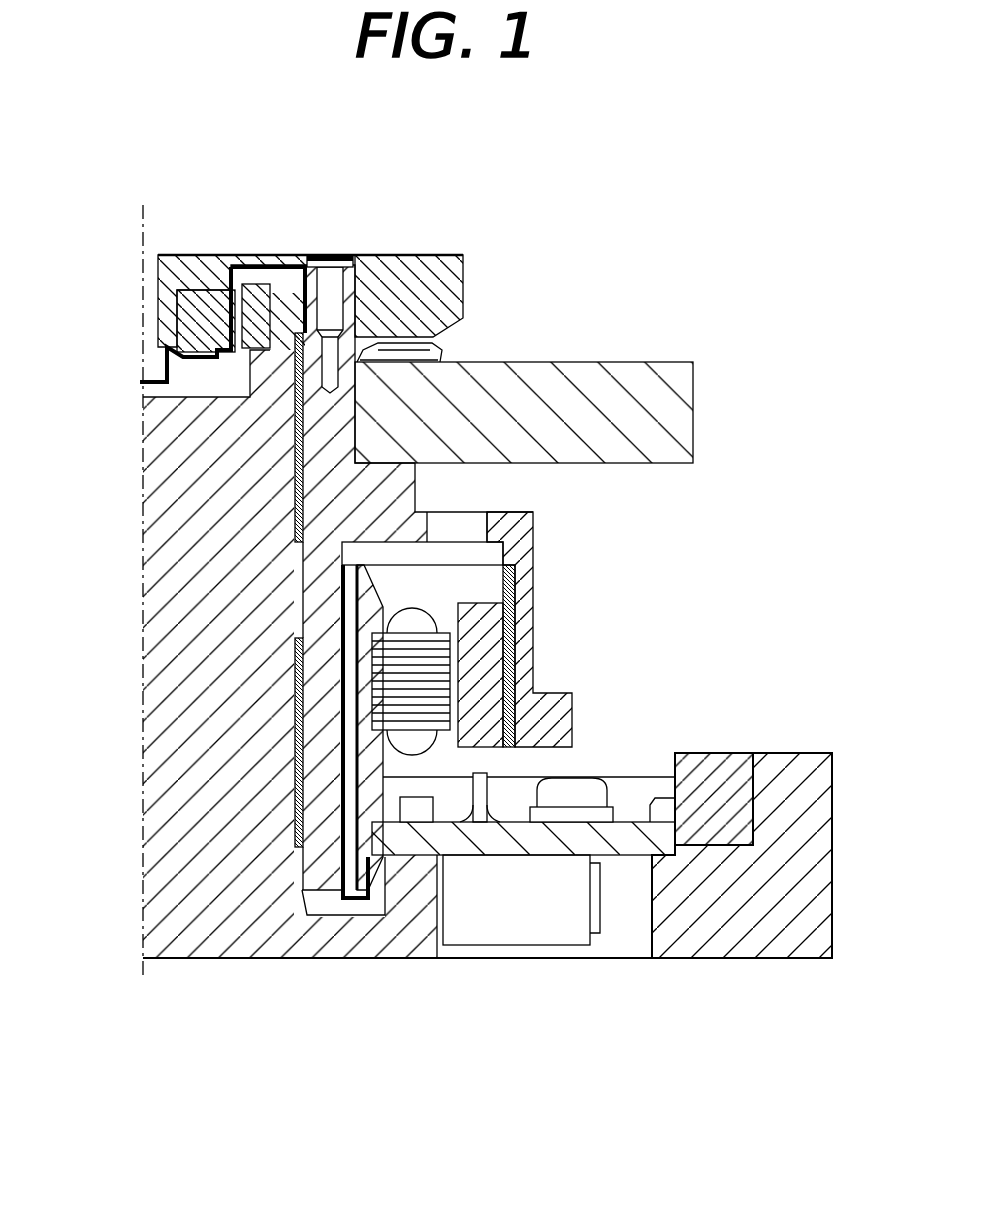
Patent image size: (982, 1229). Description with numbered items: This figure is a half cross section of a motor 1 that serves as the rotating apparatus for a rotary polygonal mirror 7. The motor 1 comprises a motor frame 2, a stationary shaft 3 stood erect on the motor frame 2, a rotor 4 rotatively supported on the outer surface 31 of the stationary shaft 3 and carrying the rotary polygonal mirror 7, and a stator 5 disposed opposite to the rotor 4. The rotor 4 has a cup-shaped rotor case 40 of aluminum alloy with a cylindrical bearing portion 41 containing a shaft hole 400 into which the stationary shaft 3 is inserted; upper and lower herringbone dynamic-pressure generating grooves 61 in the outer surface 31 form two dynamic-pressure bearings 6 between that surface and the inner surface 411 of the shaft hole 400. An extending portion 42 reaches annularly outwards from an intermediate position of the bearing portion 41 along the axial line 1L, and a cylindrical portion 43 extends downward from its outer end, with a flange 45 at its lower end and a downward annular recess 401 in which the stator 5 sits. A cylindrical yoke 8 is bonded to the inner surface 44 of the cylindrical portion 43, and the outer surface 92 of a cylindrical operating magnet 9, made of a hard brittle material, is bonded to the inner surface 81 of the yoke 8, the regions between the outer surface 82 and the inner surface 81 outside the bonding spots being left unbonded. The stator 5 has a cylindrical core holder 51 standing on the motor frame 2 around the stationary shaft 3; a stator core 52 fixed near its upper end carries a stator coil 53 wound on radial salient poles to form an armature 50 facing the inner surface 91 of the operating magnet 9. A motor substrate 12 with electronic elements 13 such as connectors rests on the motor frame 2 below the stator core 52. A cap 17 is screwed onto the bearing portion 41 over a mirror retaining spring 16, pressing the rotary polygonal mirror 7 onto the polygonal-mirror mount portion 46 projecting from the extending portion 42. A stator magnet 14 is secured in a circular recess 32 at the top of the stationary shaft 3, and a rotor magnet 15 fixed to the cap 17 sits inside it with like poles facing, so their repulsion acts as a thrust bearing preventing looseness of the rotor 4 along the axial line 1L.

The motor 1 is at (675, 202).
The axial line 1L is at (143, 246).
The motor frame 2 is at (375, 948).
The stationary shaft 3 is at (177, 667).
The rotor 4 is at (578, 533).
The stator 5 is at (412, 772).
The dynamic-pressure bearing 6 is at (297, 527).
The dynamic-pressure generating groove 61 is at (293, 670).
The rotary polygonal mirror 7 is at (690, 405).
The yoke 8 is at (531, 800).
The operating magnet 9 is at (472, 842).
The motor substrate 12 is at (613, 847).
The electronic element 13 is at (487, 825).
The stator magnet 14 is at (262, 290).
The rotor magnet 15 is at (205, 295).
The mirror retaining spring 16 is at (440, 348).
The cap 17 is at (422, 265).
The outer surface 31 is at (297, 467).
The recess 32 is at (176, 383).
The rotor case 40 is at (550, 620).
The bearing portion 41 is at (535, 525).
The extending portion 42 is at (535, 552).
The cylindrical portion 43 is at (535, 630).
The inner surface 44 is at (428, 592).
The flange 45 is at (553, 720).
The polygonal-mirror mount portion 46 is at (416, 488).
The armature 50 is at (206, 731).
The core holder 51 is at (352, 875).
The stator core 52 is at (355, 708).
The stator coil 53 is at (367, 690).
The inner surface 81 is at (445, 680).
The outer surface 82 is at (500, 664).
The inner surface 91 is at (457, 748).
The outer surface 92 is at (518, 598).
The shaft hole 400 is at (303, 432).
The annular recess 401 is at (518, 577).
The inner surface 411 is at (457, 527).